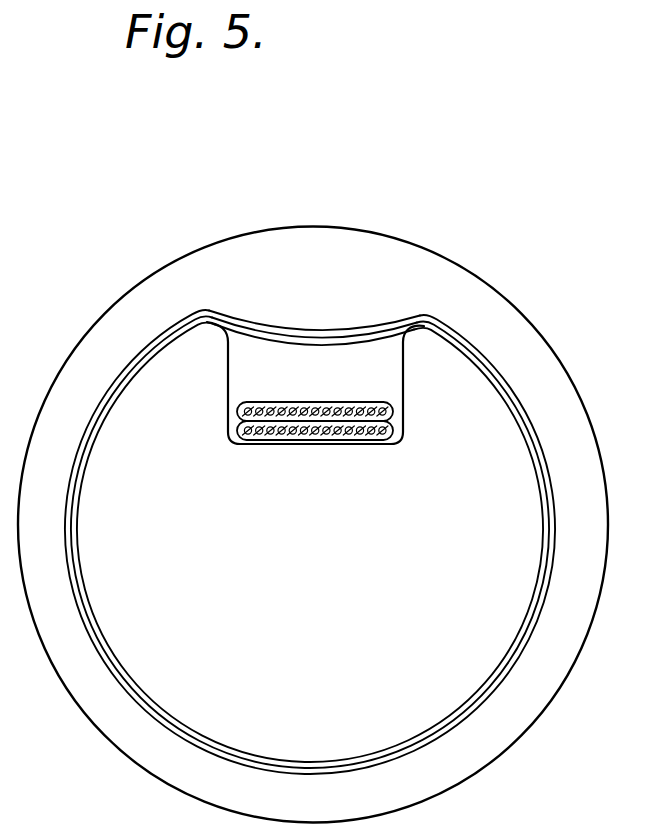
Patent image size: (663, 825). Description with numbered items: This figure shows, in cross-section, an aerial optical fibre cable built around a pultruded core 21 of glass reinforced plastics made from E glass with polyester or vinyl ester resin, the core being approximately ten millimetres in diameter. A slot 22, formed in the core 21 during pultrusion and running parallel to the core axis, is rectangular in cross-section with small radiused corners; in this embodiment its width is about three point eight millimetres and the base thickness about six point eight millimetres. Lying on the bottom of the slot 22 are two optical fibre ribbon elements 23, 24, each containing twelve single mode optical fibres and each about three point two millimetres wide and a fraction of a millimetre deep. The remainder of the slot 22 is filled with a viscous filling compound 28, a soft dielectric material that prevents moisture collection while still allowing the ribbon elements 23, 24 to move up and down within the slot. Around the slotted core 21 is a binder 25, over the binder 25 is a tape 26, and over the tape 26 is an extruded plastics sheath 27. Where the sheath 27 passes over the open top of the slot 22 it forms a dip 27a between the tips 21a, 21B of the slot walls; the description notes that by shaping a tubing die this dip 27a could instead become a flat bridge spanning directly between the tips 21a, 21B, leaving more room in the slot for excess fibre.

The pultruded core 21 is at (506, 459).
The tip of slot wall 21a is at (201, 342).
The tip of slot wall 21B is at (433, 342).
The slot 22 is at (392, 370).
The optical fibre ribbon element 23 is at (242, 410).
The optical fibre ribbon element 24 is at (242, 432).
The binder 25 is at (500, 367).
The tape 26 is at (518, 387).
The plastics sheath 27 is at (483, 313).
The dip 27a is at (315, 324).
The viscous filling compound 28 is at (261, 362).